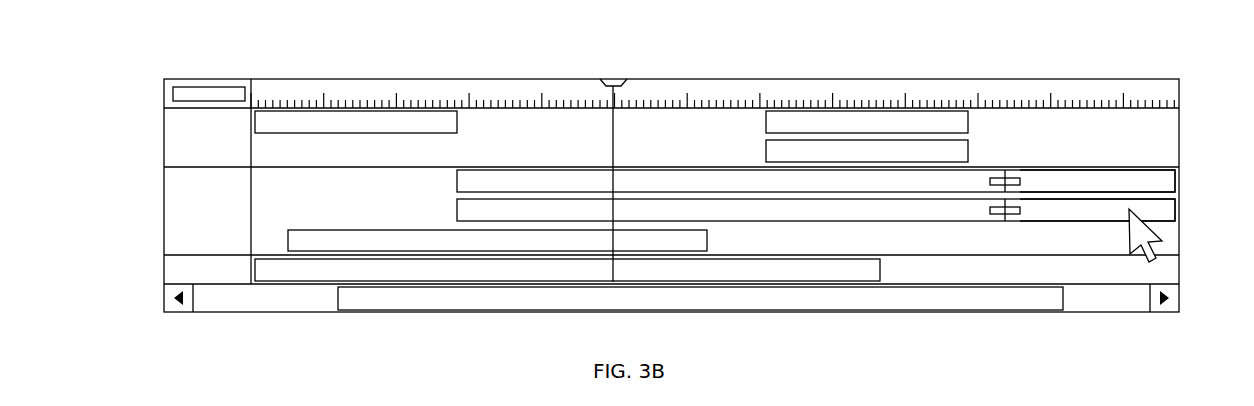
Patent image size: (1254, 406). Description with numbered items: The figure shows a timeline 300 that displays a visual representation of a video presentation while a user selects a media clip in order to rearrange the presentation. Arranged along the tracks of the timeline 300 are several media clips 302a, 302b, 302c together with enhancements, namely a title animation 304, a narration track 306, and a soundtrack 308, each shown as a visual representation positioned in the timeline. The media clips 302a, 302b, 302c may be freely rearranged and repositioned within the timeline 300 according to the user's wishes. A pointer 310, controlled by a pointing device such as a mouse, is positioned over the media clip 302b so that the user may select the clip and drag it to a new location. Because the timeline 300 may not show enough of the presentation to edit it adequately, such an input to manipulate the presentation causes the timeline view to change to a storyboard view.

The timeline 300 is at (166, 20).
The media clip 302a is at (457, 212).
The media clip 302b is at (1177, 181).
The media clip 302c is at (968, 120).
The title animation 304 is at (457, 120).
The narration track 306 is at (707, 240).
The soundtrack 308 is at (880, 270).
The pointer 310 is at (1158, 250).